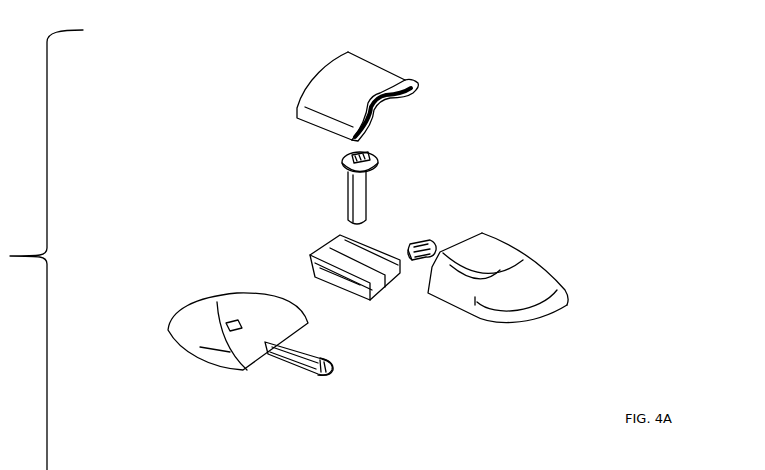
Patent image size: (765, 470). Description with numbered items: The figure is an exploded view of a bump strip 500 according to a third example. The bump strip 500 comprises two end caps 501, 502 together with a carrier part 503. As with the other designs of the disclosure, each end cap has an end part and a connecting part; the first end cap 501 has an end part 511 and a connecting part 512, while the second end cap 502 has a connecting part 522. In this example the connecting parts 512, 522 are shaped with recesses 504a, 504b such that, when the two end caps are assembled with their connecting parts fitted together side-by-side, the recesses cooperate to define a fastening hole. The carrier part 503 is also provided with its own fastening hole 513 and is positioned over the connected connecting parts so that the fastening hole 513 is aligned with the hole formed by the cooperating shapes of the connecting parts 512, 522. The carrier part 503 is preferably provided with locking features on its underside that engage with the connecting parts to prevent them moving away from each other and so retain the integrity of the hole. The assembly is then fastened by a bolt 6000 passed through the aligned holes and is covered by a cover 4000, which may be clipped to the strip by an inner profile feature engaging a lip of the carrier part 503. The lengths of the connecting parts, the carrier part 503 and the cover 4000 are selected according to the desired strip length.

The bump strip 500 is at (203, 125).
The cover 4000 is at (408, 78).
The bolt 6000 is at (382, 158).
The end cap 501 is at (255, 240).
The end part 511 is at (180, 343).
The connecting part 512 is at (290, 368).
The recess 504b is at (314, 380).
The carrier part 503 is at (367, 300).
The fastening hole 513 is at (387, 287).
The recess 504a is at (440, 277).
The connecting part 522 is at (418, 242).
The end cap 502 is at (567, 305).